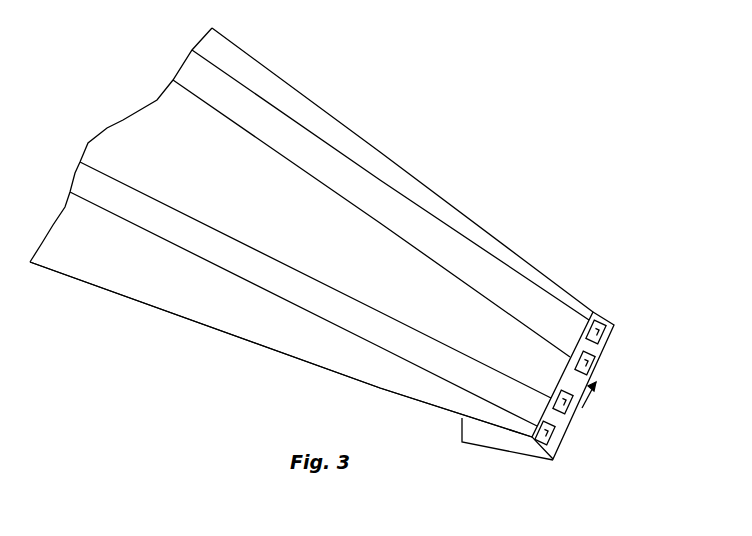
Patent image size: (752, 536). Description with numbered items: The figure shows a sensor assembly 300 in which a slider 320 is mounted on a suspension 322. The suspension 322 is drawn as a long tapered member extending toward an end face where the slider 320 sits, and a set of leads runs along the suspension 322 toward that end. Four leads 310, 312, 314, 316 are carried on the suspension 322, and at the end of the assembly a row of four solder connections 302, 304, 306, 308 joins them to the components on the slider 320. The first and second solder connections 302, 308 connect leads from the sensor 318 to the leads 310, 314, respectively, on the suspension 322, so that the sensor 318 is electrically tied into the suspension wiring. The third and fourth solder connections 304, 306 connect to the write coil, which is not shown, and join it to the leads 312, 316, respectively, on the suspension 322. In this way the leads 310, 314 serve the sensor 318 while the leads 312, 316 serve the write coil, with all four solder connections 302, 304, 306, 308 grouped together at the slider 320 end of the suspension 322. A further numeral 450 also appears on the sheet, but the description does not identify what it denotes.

The sensor assembly 300 is at (172, 383).
The first solder connection 302 is at (546, 442).
The third solder connection 304 is at (568, 417).
The fourth solder connection 306 is at (585, 362).
The second solder connection 308 is at (615, 325).
The lead 310 is at (277, 292).
The lead 312 is at (380, 347).
The lead 314 is at (462, 240).
The lead 316 is at (513, 308).
The sensor 318 is at (593, 393).
The slider 320 is at (492, 440).
The suspension 322 is at (400, 393).
The stray label 450 is at (32, 526).